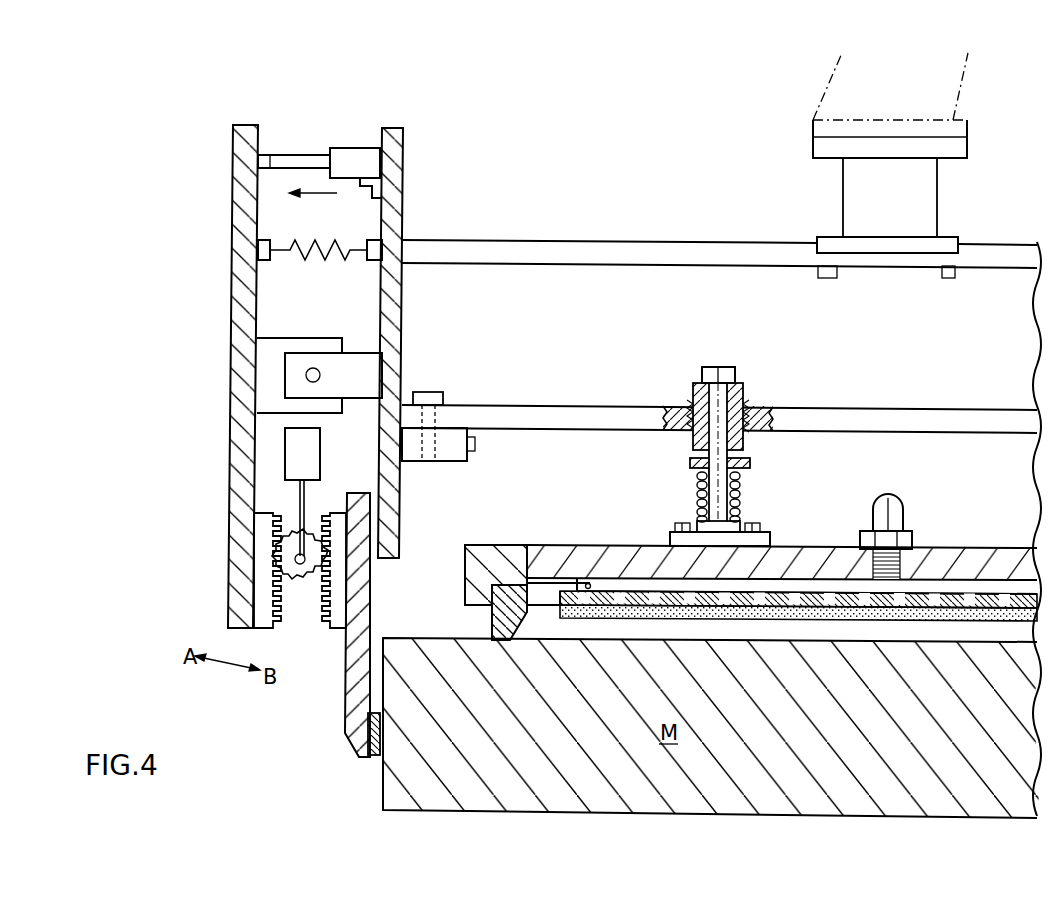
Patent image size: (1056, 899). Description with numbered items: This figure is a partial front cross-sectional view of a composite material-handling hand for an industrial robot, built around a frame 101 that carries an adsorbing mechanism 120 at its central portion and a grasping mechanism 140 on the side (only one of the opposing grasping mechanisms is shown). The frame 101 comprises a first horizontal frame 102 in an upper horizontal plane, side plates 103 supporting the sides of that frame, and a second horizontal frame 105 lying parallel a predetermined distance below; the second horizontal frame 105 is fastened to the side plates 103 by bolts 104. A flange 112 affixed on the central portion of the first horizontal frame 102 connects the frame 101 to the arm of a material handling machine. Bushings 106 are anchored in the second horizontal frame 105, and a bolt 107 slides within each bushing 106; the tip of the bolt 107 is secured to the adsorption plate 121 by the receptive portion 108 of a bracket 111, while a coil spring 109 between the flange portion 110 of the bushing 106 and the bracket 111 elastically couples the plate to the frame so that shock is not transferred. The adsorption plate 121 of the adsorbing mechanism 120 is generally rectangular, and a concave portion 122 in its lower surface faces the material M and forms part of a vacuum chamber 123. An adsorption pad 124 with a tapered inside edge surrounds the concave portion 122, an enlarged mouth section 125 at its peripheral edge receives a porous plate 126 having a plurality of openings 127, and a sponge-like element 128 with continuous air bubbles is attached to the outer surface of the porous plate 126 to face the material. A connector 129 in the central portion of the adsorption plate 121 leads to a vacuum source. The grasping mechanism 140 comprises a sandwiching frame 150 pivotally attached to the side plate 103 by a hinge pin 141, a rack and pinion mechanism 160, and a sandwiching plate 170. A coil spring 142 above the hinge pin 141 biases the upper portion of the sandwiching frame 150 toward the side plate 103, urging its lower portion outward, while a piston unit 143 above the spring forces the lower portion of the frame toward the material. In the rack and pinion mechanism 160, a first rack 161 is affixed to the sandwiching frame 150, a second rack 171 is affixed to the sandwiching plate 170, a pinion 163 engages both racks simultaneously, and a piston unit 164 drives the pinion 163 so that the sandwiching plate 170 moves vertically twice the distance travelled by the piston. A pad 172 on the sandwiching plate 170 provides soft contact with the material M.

The frame 101 is at (635, 198).
The first horizontal frame 102 is at (677, 250).
The side plate 103 is at (404, 320).
The bolt 104 is at (428, 393).
The second horizontal frame 105 is at (575, 413).
The bushing 106 is at (748, 407).
The bolt 107 is at (738, 374).
The receptive portion 108 is at (680, 522).
The coil spring 109 is at (742, 510).
The flange portion 110 is at (752, 463).
The bracket 111 is at (674, 538).
The flange 112 is at (820, 141).
The adsorbing mechanism 120 is at (841, 531).
The adsorption plate 121 is at (997, 564).
The concave portion 122 is at (583, 580).
The vacuum chamber 123 is at (785, 587).
The adsorption pad 124 is at (494, 610).
The enlarged mouth section 125 is at (560, 592).
The porous plate 126 is at (670, 617).
The openings 127 is at (877, 601).
The sponge-like element 128 is at (750, 619).
The connector 129 is at (904, 517).
The grasping mechanism 140 is at (314, 119).
The hinge pin 141 is at (313, 366).
The coil spring 142 is at (314, 242).
The piston unit 143 is at (345, 150).
The sandwiching frame 150 is at (236, 279).
The rack and pinion mechanism 160 is at (297, 623).
The first rack 161 is at (256, 552).
The pinion 163 is at (312, 528).
The piston unit 164 is at (316, 462).
The sandwiching plate 170 is at (345, 722).
The second rack 171 is at (342, 622).
The pad 172 is at (373, 757).